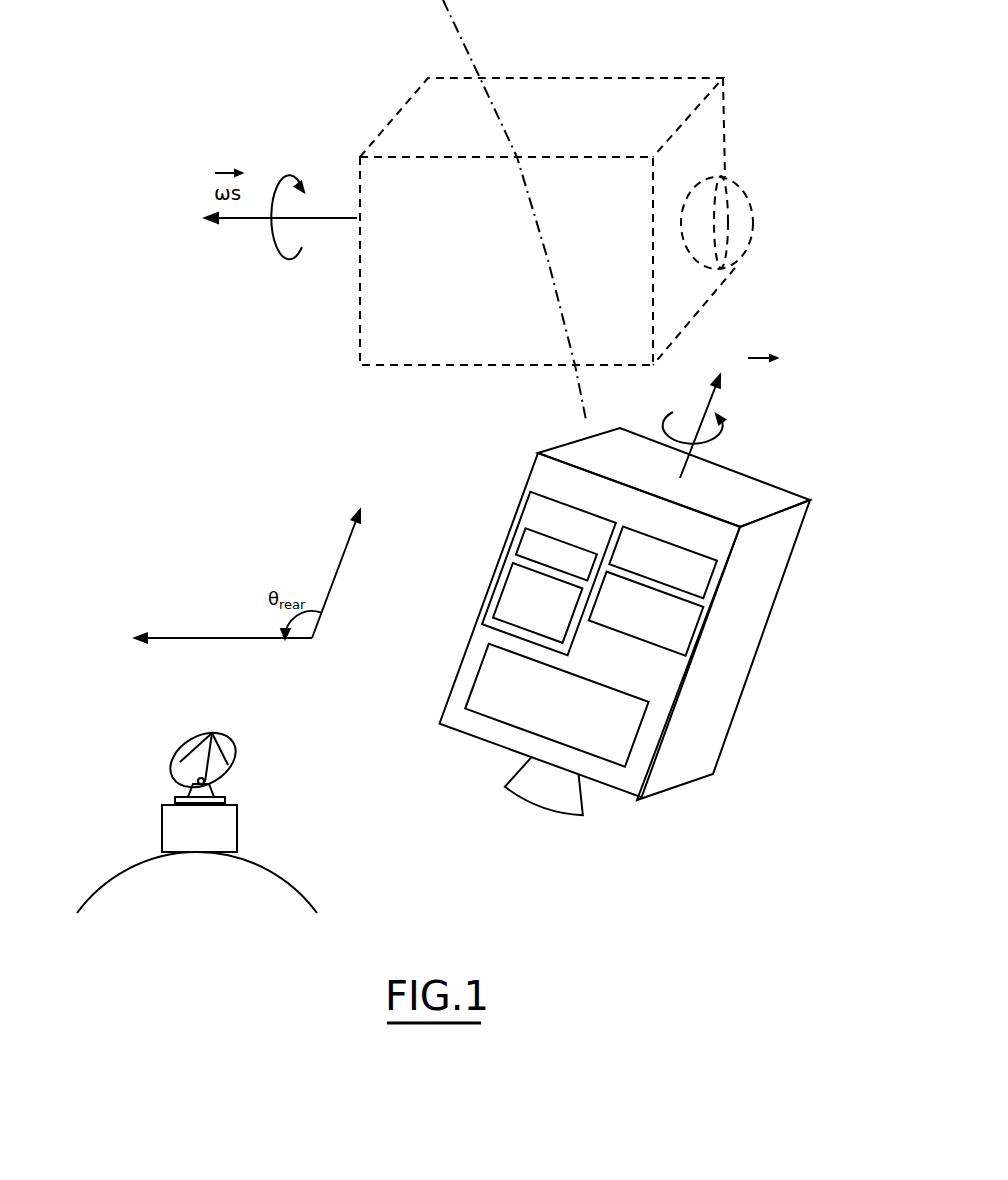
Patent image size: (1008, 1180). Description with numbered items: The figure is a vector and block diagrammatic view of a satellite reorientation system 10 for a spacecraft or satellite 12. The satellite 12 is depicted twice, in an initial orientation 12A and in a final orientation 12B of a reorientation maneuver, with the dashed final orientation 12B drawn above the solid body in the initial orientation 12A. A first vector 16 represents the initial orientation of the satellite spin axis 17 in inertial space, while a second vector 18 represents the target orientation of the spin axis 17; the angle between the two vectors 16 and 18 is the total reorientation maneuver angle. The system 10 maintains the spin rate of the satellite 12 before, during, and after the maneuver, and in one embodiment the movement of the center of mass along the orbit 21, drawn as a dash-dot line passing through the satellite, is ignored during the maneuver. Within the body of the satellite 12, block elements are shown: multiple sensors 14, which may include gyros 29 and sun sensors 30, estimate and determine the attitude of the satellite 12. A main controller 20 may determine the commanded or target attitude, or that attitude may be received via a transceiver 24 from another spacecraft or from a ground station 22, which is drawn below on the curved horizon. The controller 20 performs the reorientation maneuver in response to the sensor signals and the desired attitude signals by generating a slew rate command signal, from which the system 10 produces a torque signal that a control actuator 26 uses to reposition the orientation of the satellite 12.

The satellite reorientation system 10 is at (808, 388).
The satellite 12 is at (755, 480).
The initial orientation 12A is at (767, 628).
The final orientation 12B is at (504, 366).
The sensors 14 is at (520, 506).
The first vector 16 is at (340, 571).
The spin axis 17 is at (728, 440).
The second vector 18 is at (210, 640).
The main controller 20 is at (712, 625).
The orbit 21 is at (468, 42).
The ground station 22 is at (198, 852).
The transceiver 24 is at (733, 572).
The control actuator 26 is at (642, 732).
The gyros 29 is at (525, 540).
The sun sensors 30 is at (500, 580).